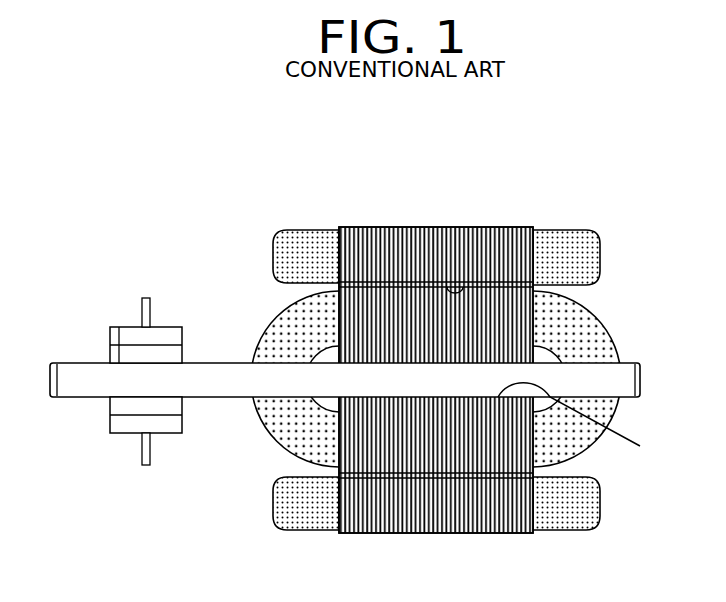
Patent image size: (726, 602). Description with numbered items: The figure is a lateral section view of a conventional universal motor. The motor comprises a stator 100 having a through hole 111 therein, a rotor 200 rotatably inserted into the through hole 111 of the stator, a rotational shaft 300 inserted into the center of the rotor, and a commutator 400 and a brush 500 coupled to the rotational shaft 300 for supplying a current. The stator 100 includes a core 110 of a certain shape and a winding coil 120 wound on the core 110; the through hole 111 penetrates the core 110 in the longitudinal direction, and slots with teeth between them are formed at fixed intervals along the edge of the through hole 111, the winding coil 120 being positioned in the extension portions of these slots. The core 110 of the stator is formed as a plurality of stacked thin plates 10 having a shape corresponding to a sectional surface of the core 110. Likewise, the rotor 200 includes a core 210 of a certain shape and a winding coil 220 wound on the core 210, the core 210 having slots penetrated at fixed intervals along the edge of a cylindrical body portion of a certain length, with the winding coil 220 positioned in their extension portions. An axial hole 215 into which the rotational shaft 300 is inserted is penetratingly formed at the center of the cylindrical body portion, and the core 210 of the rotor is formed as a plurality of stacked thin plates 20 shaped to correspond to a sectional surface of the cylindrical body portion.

The stacked thin plates 10 is at (371, 534).
The stacked thin plates 20 is at (430, 480).
The stator 100 is at (389, 228).
The core 110 is at (336, 230).
The through hole 111 is at (463, 282).
The winding coil 120 is at (600, 229).
The rotor 200 is at (415, 287).
The core 210 is at (533, 323).
The axial hole 215 is at (585, 425).
The winding coil 220 is at (602, 333).
The rotational shaft 300 is at (74, 351).
The commutator 400 is at (118, 350).
The brush 500 is at (172, 333).